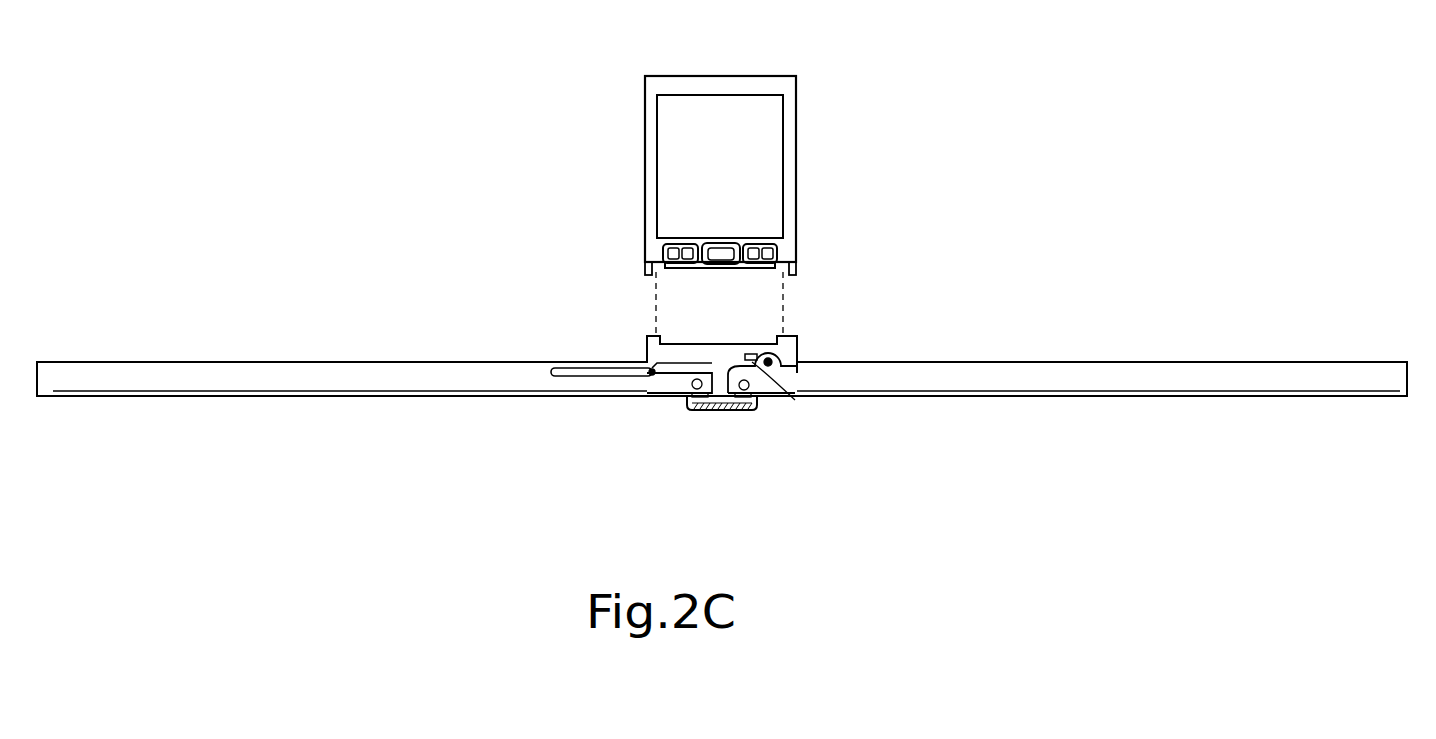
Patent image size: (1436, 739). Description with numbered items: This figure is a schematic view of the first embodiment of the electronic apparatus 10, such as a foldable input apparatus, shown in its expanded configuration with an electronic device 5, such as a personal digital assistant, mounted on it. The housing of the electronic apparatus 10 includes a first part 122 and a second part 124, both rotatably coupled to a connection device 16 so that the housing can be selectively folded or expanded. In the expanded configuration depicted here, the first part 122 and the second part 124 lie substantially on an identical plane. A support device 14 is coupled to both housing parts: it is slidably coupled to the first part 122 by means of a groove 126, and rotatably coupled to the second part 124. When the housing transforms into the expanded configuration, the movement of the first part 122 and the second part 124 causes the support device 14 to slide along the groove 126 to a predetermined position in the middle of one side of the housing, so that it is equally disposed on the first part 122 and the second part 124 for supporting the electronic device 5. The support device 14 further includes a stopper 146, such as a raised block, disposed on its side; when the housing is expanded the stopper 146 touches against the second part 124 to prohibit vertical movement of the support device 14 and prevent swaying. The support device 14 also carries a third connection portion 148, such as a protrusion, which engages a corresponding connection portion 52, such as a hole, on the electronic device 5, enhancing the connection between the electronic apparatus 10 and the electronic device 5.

The electronic device 5 is at (722, 169).
The electronic apparatus 10 is at (722, 298).
The support device 14 is at (726, 358).
The connection device 16 is at (715, 400).
The connection portion 52 is at (648, 262).
The first part 122 is at (271, 372).
The second part 124 is at (1063, 373).
The groove 126 is at (578, 370).
The stopper 146 is at (760, 367).
The third connection portion 148 is at (656, 335).